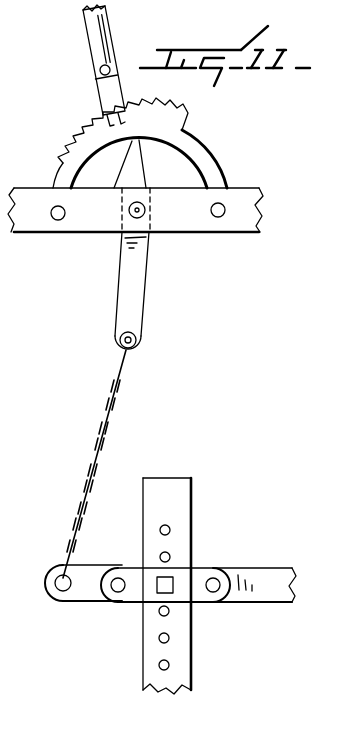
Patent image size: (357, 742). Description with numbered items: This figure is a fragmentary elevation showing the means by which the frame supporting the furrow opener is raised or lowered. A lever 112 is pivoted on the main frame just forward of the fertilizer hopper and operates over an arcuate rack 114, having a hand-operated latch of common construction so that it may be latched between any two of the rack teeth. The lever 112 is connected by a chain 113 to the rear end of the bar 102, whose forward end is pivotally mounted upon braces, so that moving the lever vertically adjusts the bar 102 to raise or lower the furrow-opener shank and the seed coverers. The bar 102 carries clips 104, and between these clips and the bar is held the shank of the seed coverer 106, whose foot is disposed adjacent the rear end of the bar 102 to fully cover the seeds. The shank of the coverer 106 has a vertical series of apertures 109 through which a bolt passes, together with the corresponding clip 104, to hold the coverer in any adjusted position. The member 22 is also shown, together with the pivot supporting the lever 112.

The bar 22 is at (184, 217).
The bar 102 is at (86, 598).
The clips 104 is at (223, 576).
The seed coverer 106 is at (183, 484).
The apertures 109 is at (171, 556).
The lever 112 is at (82, 31).
The chain 113 is at (101, 436).
The arcuate rack 114 is at (195, 148).